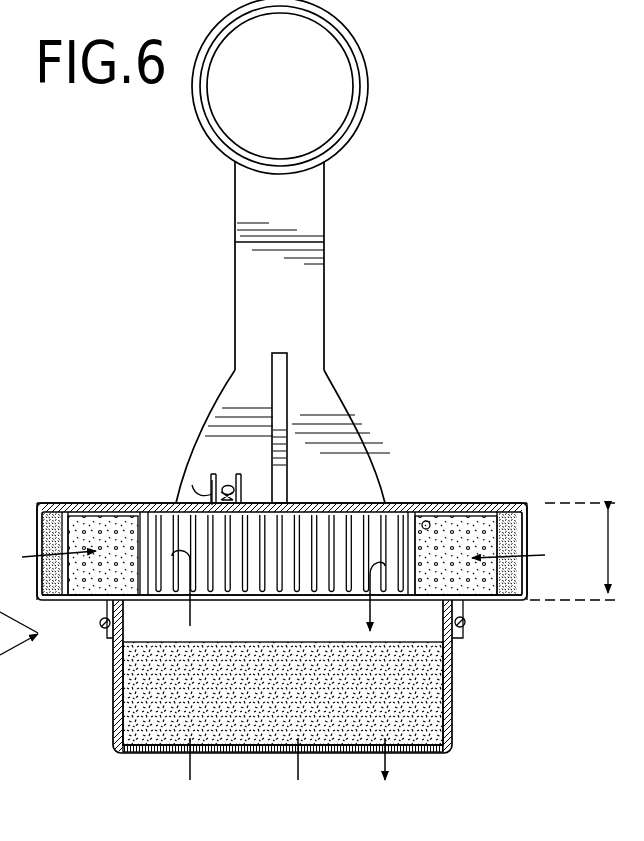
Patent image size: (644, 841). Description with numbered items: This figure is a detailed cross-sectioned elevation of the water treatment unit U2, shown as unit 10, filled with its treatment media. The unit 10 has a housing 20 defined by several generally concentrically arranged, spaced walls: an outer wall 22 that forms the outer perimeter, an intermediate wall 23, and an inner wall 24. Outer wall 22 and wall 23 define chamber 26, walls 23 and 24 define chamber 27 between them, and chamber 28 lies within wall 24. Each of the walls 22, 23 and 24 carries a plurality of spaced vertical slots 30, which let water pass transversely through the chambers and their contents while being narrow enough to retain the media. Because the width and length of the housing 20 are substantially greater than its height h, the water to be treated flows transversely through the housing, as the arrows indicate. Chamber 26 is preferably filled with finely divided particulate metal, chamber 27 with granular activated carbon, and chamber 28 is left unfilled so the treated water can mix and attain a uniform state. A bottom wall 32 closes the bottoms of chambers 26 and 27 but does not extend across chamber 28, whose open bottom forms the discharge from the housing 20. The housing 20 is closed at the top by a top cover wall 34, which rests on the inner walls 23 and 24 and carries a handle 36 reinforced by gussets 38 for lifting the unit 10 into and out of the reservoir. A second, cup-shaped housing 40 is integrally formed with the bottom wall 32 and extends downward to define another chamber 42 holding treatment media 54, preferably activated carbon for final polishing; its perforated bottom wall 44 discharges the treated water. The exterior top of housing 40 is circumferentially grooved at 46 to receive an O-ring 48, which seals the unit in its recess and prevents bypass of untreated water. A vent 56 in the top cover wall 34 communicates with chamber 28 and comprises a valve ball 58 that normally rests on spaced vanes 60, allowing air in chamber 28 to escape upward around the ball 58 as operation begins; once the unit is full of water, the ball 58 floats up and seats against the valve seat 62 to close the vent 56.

The water treatment unit 10 is at (531, 500).
The housing 20 is at (533, 532).
The outer wall 22 is at (525, 577).
The wall 23 is at (490, 530).
The wall 24 is at (430, 524).
The chamber 26 is at (43, 532).
The chamber 27 is at (98, 520).
The chamber 28 is at (264, 583).
The vertical slots 30 is at (383, 503).
The bottom wall 32 is at (78, 600).
The top cover wall 34 is at (68, 505).
The handle 36 is at (235, 280).
The gussets 38 is at (290, 382).
The second housing 40 is at (452, 687).
The chamber 42 is at (135, 628).
The bottom wall 44 is at (337, 755).
The groove 46 is at (452, 621).
The O-ring 48 is at (466, 620).
The treatment media 54 is at (243, 695).
The vent 56 is at (192, 485).
The valve ball 58 is at (237, 490).
The vanes 60 is at (212, 496).
The valve seat 62 is at (213, 472).
The water treatment unit U2 is at (488, 500).
The height h is at (574, 551).